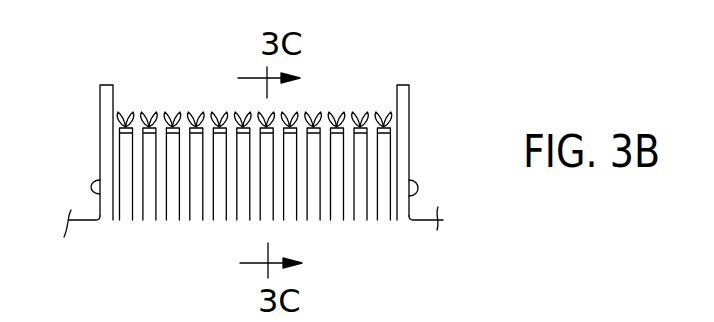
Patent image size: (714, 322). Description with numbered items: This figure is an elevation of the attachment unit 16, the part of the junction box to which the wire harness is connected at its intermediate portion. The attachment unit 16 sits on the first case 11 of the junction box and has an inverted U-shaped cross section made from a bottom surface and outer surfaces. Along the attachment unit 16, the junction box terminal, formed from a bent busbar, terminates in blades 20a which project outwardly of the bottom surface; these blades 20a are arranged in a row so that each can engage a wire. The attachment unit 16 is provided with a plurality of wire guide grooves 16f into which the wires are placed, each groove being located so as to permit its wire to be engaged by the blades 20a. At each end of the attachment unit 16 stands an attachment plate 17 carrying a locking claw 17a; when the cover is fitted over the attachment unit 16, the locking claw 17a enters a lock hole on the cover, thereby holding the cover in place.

The first case 11 is at (416, 222).
The attachment unit 16 is at (181, 262).
The wire guide groove 16f is at (125, 176).
The attachment plate 17 is at (106, 84).
The locking claw 17a is at (420, 180).
The blade 20a is at (132, 112).